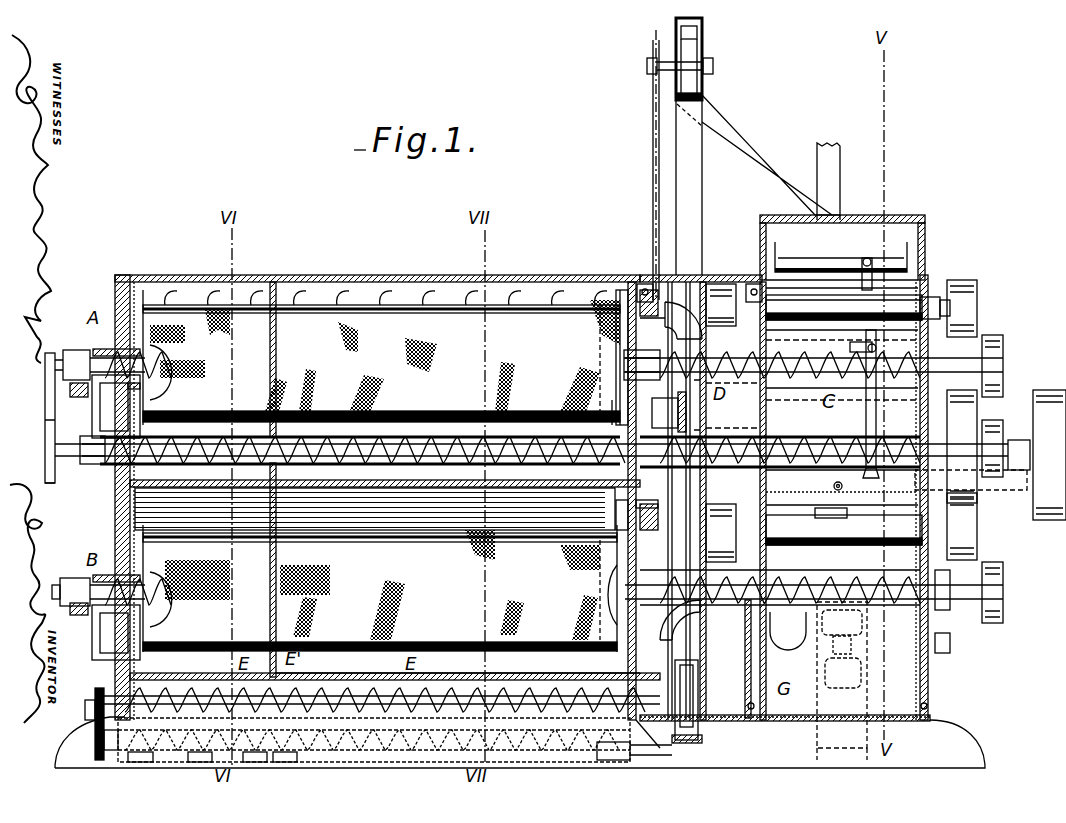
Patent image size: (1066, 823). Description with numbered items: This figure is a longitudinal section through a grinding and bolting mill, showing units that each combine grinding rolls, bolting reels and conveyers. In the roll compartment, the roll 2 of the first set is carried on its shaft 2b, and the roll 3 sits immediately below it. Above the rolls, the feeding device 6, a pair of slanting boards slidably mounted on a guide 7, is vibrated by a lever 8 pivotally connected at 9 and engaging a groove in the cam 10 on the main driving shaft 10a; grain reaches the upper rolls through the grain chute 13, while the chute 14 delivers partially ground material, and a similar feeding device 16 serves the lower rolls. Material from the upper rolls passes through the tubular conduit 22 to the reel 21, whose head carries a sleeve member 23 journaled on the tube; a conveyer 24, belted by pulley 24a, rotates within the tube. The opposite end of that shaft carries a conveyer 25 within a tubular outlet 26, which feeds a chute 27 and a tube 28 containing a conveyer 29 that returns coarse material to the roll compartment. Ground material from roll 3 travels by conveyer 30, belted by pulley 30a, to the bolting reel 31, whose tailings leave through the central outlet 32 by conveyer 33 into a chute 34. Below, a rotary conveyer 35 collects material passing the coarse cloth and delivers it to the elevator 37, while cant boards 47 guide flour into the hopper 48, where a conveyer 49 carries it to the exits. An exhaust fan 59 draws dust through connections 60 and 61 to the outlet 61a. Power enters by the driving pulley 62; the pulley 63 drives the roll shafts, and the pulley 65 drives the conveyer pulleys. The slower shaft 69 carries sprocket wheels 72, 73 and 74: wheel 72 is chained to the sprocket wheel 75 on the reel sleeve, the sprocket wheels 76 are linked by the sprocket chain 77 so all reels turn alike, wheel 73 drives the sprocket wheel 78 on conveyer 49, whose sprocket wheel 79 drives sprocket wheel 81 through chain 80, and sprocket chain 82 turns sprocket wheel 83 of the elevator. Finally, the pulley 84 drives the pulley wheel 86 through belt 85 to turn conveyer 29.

The roll 2 is at (844, 307).
The shaft 2b is at (928, 292).
The roll 3 is at (844, 526).
The feeding device 6 is at (841, 251).
The guide 7 is at (845, 262).
The lever 8 is at (851, 341).
The pivot 9 is at (866, 350).
The cam 10 is at (864, 436).
The main driving shaft 10a is at (990, 466).
The grain chute 13 is at (838, 165).
The chute 14 is at (835, 205).
The feeding device 16 is at (842, 487).
The reel 21 is at (381, 465).
The tubular conduit 22 is at (780, 424).
The sleeve member 23 is at (632, 368).
The conveyer 24 is at (814, 365).
The pulley 24a is at (1005, 372).
The conveyer 25 is at (172, 358).
The tubular outlet 26 is at (110, 352).
The chute 27 is at (98, 414).
The tube 28 is at (106, 466).
The conveyer 29 is at (195, 435).
The conveyer 30 is at (814, 583).
The pulley 30a is at (1005, 590).
The bolting reel 31 is at (380, 588).
The central outlet 32 is at (98, 578).
The conveyer 33 is at (160, 588).
The chute 34 is at (100, 628).
The rotary conveyer 35 is at (192, 698).
The elevator 37 is at (700, 35).
The cant boards 47 is at (440, 490).
The hopper 48 is at (458, 662).
The conveyer 49 is at (390, 748).
The exhaust fan 59 is at (850, 672).
The connection 60 is at (676, 312).
The connection 61 is at (812, 596).
The outlet 61a is at (830, 735).
The driving pulley 62 is at (1037, 455).
The pulley 63 is at (962, 446).
The pulley 65 is at (990, 430).
The shaft 69 is at (740, 408).
The sprocket wheel 72 is at (700, 414).
The sprocket wheel 73 is at (672, 406).
The sprocket wheel 74 is at (622, 402).
The sprocket wheel 75 is at (672, 378).
The sprocket wheels 76 is at (665, 322).
The sprocket chain 77 is at (640, 492).
The sprocket wheel 78 is at (678, 752).
The sprocket wheel 79 is at (96, 738).
The chain 80 is at (88, 712).
The sprocket wheel 81 is at (96, 694).
The sprocket chain 82 is at (651, 220).
The sprocket wheel 83 is at (655, 75).
The pulley 84 is at (50, 355).
The belt 85 is at (50, 404).
The pulley wheel 86 is at (48, 448).